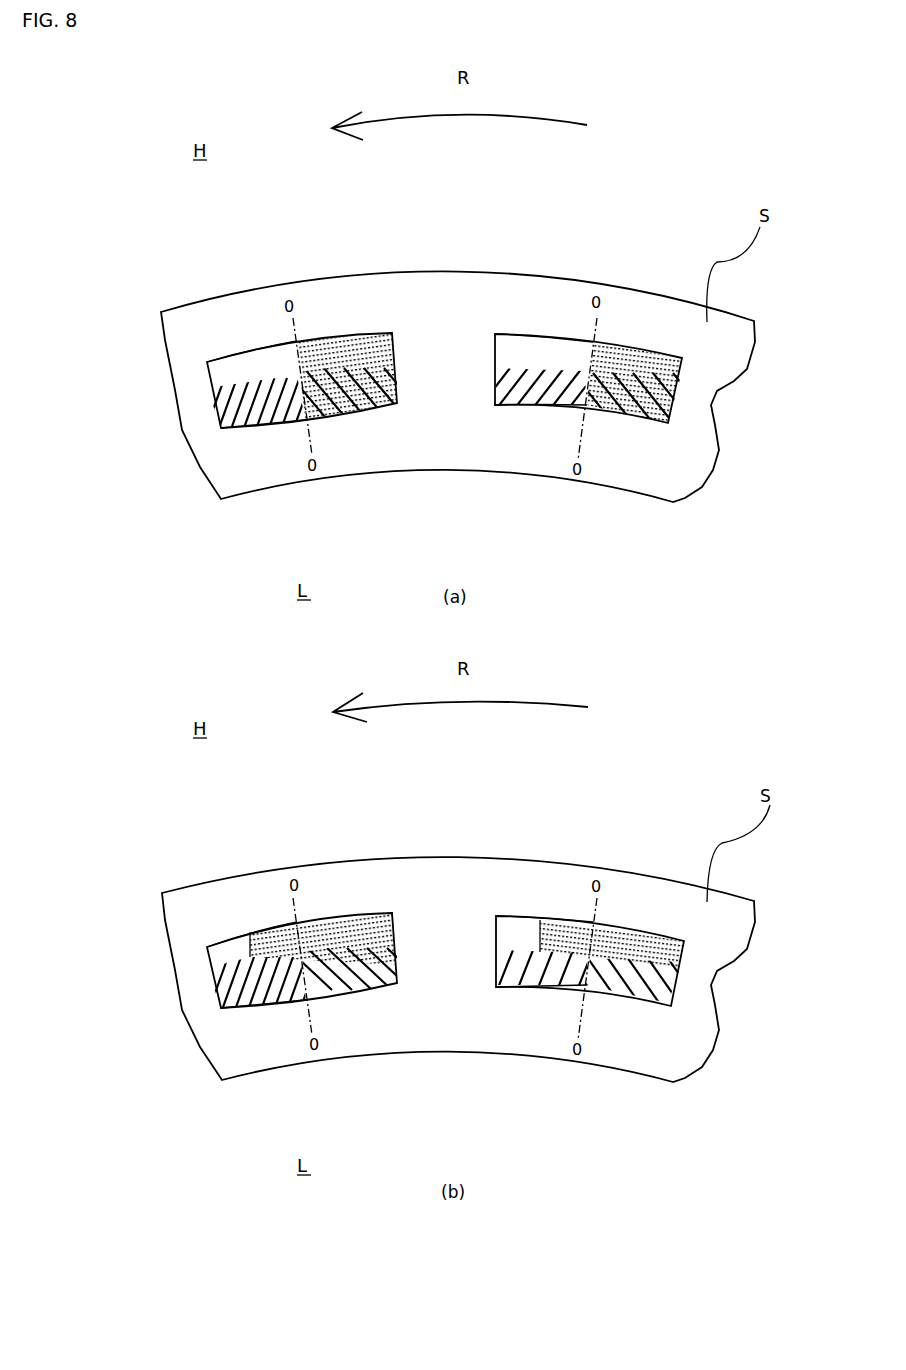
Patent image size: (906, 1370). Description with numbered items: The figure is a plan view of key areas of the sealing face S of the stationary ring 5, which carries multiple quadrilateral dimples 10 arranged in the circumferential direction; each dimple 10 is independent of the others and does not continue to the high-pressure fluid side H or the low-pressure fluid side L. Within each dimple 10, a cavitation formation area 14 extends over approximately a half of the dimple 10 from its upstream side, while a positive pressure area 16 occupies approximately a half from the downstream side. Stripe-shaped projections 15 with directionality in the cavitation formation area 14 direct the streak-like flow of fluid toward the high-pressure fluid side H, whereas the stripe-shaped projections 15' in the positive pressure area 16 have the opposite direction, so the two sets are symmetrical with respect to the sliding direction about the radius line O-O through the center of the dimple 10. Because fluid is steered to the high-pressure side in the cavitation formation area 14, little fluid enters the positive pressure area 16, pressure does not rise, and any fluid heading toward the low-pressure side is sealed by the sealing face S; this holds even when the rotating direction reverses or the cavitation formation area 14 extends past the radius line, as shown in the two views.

The stationary ring 5 is at (685, 298).
The dimple 10 is at (293, 342).
The cavitation formation area 14 is at (350, 358).
The stripe-shaped projections 15 is at (498, 753).
The stripe-shaped projections 15' is at (408, 754).
The positive pressure area 16 is at (233, 367).